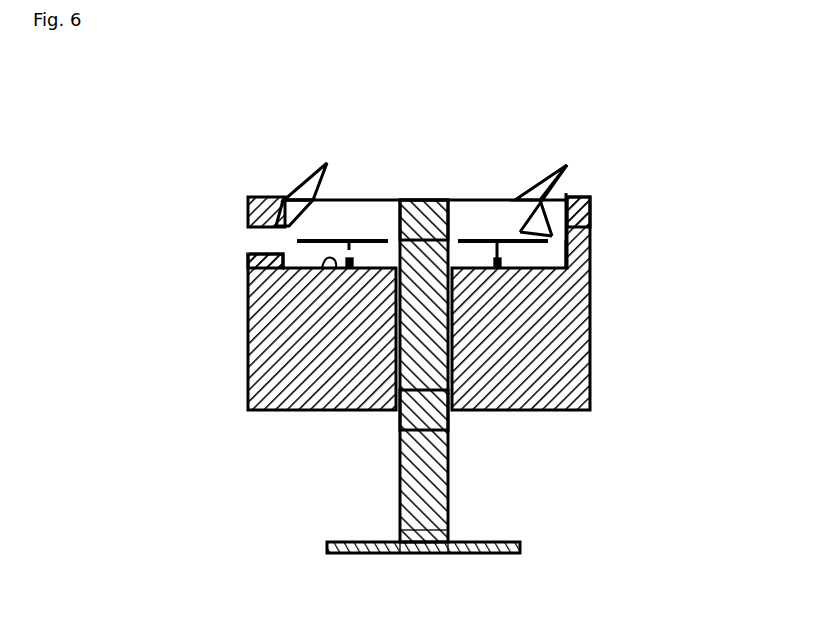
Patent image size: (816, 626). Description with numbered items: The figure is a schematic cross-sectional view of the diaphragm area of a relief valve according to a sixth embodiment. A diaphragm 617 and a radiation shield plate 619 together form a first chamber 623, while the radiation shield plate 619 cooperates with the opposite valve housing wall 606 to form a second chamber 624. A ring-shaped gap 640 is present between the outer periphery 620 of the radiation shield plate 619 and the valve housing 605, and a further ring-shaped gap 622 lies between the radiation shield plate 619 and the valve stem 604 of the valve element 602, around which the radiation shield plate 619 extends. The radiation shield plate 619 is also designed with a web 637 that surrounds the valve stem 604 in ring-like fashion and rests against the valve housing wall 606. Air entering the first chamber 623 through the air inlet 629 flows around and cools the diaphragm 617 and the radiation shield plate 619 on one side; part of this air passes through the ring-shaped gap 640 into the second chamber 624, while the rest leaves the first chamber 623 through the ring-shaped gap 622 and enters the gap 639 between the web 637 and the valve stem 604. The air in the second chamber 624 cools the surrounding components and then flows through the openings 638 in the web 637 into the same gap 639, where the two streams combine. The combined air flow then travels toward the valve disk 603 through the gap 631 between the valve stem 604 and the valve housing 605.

The valve element 602 is at (433, 542).
The valve disk 603 is at (520, 546).
The valve stem 604 is at (449, 478).
The valve housing 605 is at (590, 385).
The valve housing wall 606 is at (300, 290).
The diaphragm 617 is at (353, 198).
The radiation shield plate 619 is at (488, 241).
The outer periphery 620 is at (548, 197).
The ring-shaped gap 622 is at (454, 242).
The first chamber 623 is at (333, 226).
The second chamber 624 is at (305, 252).
The air inlet 629 is at (247, 243).
The gap 631 is at (449, 410).
The web 637 is at (588, 259).
The openings 638 is at (588, 243).
The gap 639 is at (413, 198).
The ring-shaped gap 640 is at (588, 210).